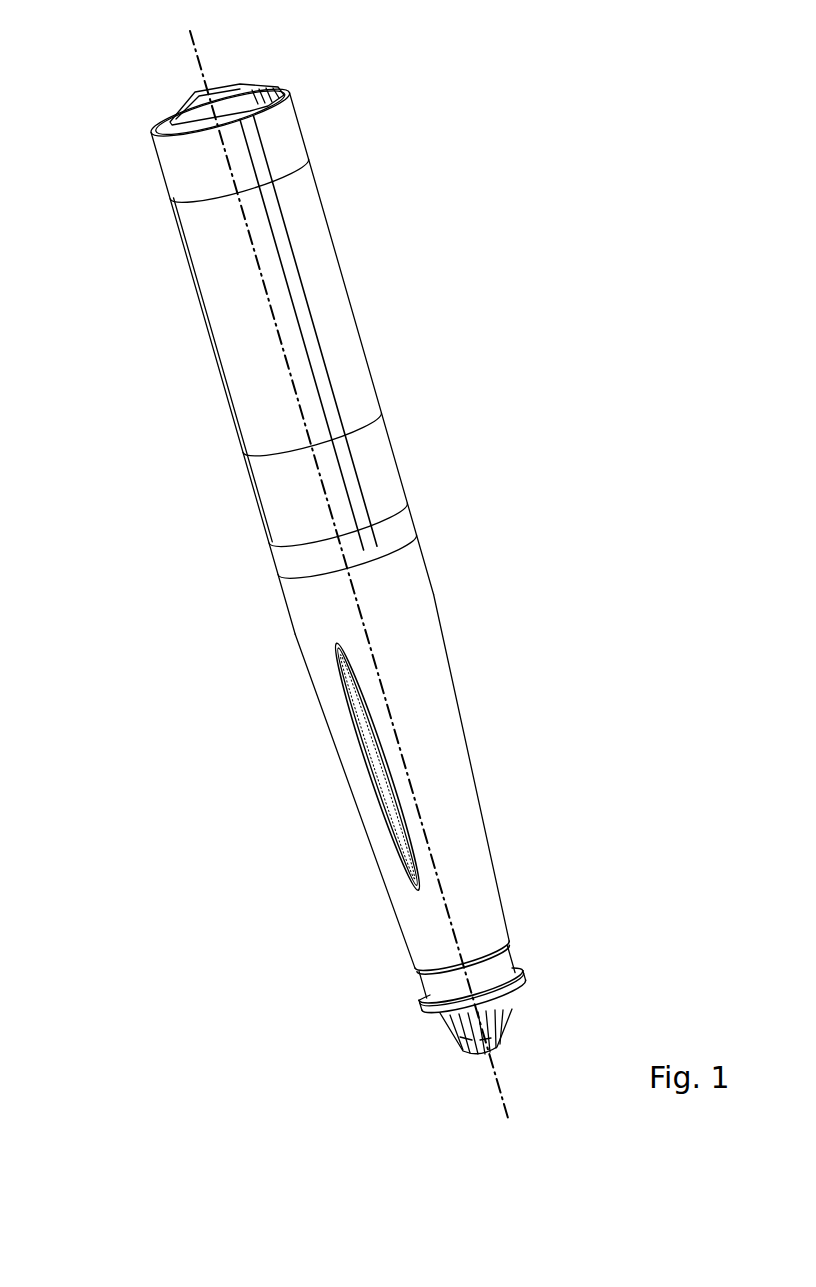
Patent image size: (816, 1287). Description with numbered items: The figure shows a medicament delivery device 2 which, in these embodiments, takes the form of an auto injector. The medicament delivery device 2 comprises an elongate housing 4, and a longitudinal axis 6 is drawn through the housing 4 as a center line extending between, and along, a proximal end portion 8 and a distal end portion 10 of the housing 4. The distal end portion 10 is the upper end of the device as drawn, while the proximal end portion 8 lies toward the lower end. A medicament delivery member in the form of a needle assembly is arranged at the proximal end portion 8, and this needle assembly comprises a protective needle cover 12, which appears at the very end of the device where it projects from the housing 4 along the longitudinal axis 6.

The medicament delivery device 2 is at (247, 873).
The housing 4 is at (245, 328).
The longitudinal axis 6 is at (192, 43).
The proximal end portion 8 is at (550, 872).
The distal end portion 10 is at (340, 130).
The protective needle cover 12 is at (462, 1023).